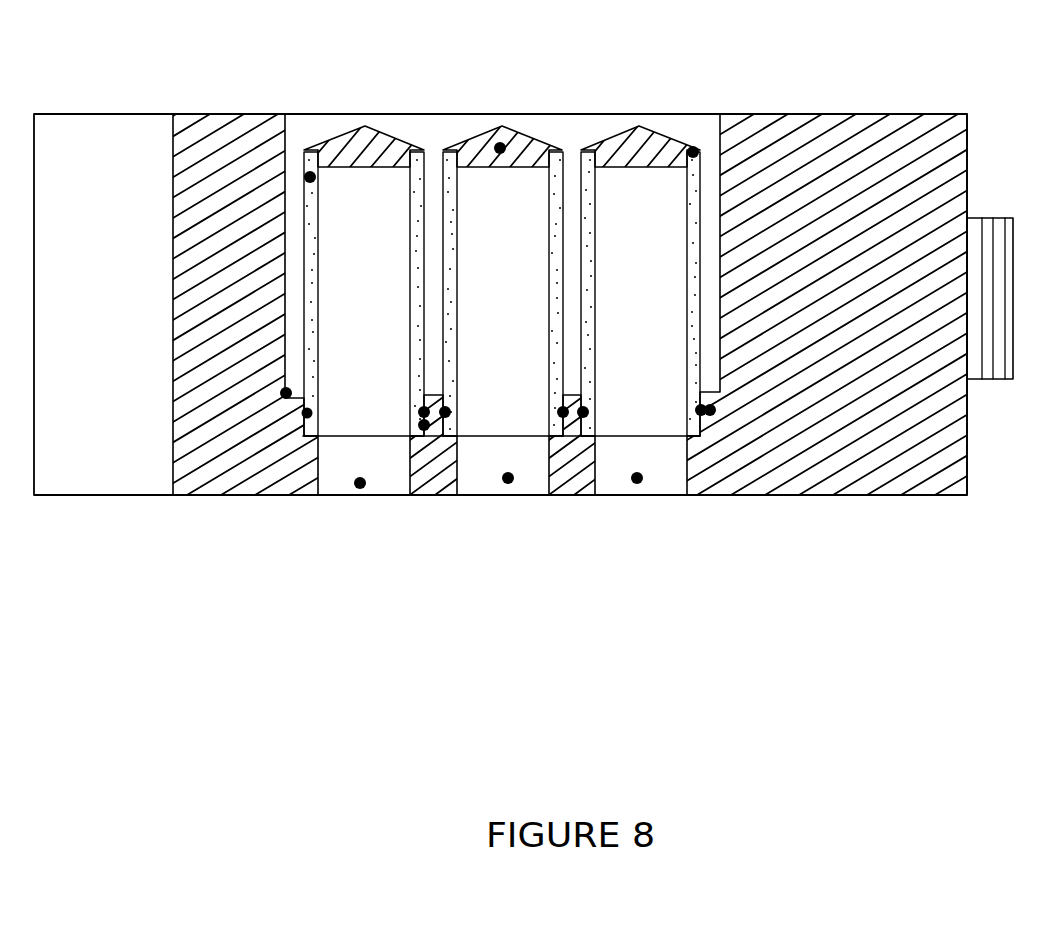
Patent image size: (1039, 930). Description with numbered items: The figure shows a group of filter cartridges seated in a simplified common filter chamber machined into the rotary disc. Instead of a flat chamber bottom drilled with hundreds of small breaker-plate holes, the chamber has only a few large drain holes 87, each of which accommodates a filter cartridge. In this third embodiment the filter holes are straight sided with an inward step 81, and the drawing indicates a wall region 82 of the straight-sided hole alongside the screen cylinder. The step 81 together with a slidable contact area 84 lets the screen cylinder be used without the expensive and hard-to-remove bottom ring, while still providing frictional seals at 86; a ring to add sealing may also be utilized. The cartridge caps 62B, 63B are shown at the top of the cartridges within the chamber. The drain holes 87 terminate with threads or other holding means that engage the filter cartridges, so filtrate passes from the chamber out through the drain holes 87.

The step 81 is at (286, 393).
The channel side wall 82 is at (310, 177).
The slidable contact area 84 is at (424, 425).
The frictional seal location 86 is at (707, 410).
The drain hole 87 is at (360, 483).
The second cap 62B is at (500, 148).
The third cap 63B is at (693, 152).